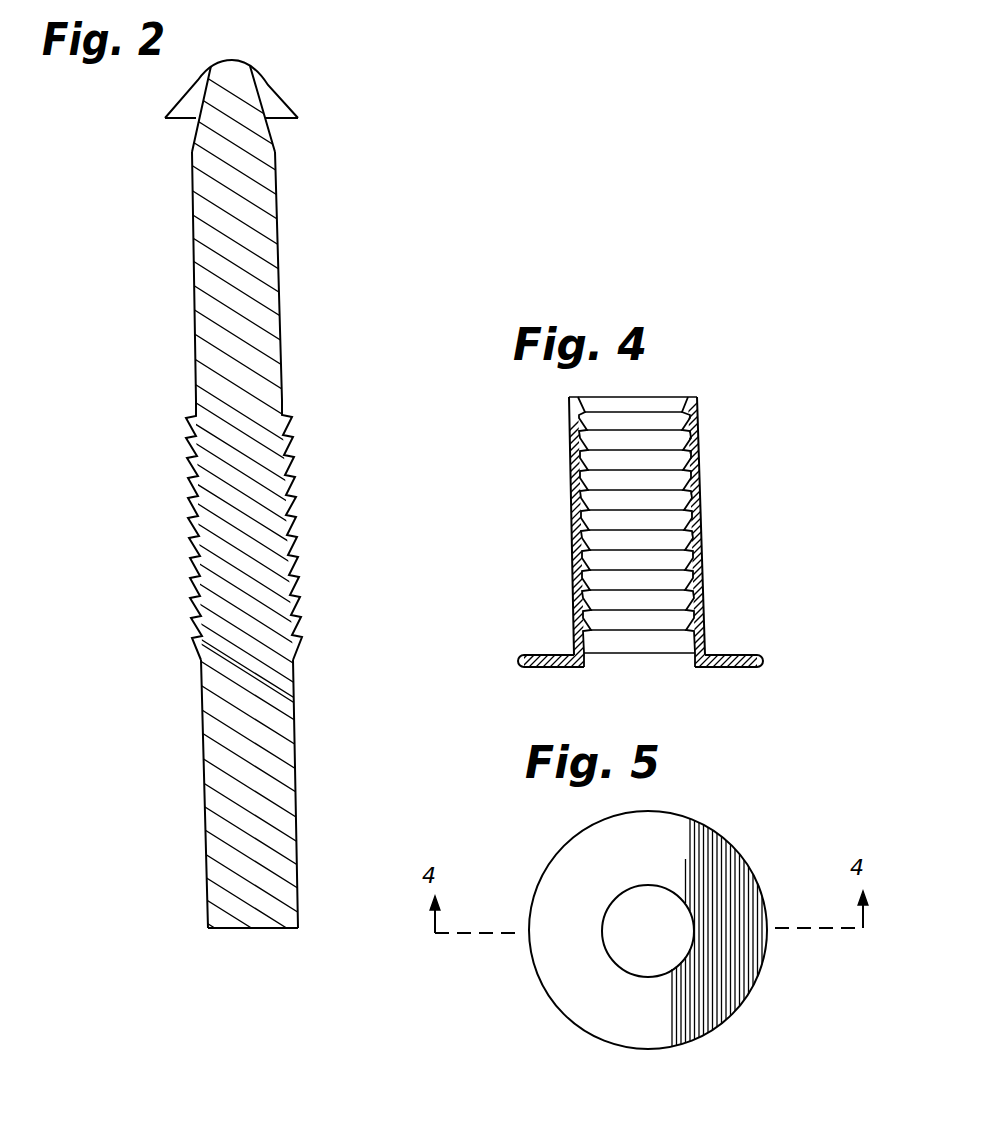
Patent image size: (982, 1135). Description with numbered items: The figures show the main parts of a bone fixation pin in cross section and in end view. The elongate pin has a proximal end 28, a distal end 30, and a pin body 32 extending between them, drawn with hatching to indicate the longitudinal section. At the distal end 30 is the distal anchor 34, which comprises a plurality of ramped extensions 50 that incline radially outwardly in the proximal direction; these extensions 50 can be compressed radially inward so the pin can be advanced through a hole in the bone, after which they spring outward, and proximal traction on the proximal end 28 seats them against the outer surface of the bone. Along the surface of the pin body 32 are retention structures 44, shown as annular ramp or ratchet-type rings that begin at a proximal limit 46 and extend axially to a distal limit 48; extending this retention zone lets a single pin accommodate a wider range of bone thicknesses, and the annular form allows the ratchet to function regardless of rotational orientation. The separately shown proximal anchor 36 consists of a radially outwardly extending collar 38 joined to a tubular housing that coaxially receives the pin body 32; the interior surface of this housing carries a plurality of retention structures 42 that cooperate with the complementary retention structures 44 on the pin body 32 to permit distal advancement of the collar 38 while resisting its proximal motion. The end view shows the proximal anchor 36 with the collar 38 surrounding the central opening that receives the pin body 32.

In FIG. 2, the proximal end 28 is at (282, 930).
In FIG. 2, the distal end 30 is at (260, 60).
In FIG. 2, the pin body 32 is at (262, 248).
In FIG. 2, the distal anchor 34 is at (266, 76).
In FIG. 4, the proximal anchor 36 is at (572, 456).
In FIG. 4, the collar 38 is at (752, 656).
In FIG. 4, the retention structures 42 is at (690, 455).
In FIG. 2, the retention structures 44 is at (188, 490).
In FIG. 2, the proximal limit 46 is at (197, 645).
In FIG. 2, the distal limit 48 is at (292, 425).
In FIG. 2, the ramped extensions 50 is at (178, 111).